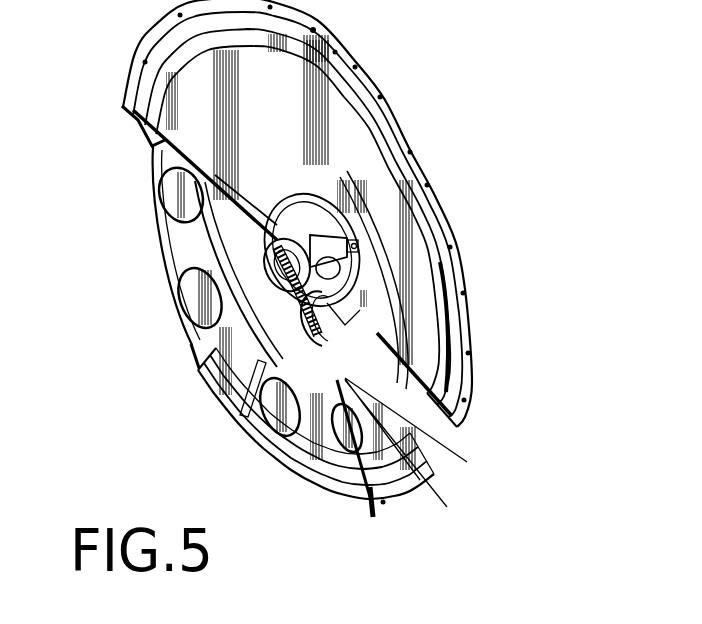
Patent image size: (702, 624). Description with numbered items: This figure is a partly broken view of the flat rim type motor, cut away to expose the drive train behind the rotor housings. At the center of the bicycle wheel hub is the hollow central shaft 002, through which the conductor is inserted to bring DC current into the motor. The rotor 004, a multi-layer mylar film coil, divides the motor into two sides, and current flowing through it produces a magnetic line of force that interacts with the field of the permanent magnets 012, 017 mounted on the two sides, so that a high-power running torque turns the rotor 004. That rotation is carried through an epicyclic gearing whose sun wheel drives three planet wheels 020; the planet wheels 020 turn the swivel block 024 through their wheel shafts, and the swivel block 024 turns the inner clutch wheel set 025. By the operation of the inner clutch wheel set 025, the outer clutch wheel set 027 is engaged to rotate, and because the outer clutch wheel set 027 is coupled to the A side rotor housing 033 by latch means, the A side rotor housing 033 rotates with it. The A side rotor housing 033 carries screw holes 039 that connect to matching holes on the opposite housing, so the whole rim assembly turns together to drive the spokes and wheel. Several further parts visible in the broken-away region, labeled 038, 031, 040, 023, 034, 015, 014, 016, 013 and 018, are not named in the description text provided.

The outer flange ring 038 is at (164, 36).
The bolt hole 031 is at (313, 30).
The screw holes 039 is at (343, 52).
The A side rotor housing 033 is at (373, 158).
The hollow central shaft 002 is at (360, 242).
The hub coupling 040 is at (350, 265).
The inner clutch wheel set 025 is at (370, 290).
The outer clutch wheel set 027 is at (335, 300).
The swivel block 024 is at (330, 333).
The crescent member 023 is at (325, 358).
The cut edge 034 is at (350, 382).
The sector wall 015 is at (345, 380).
The planet wheels 020 is at (350, 385).
The rim web 014 is at (383, 457).
The rim end 016 is at (380, 517).
The lower rim band 013 is at (317, 477).
The permanent magnets 012 is at (258, 432).
The rotor 004 is at (218, 388).
The disc with holes 018 is at (181, 247).
The permanent magnets 017 is at (178, 305).